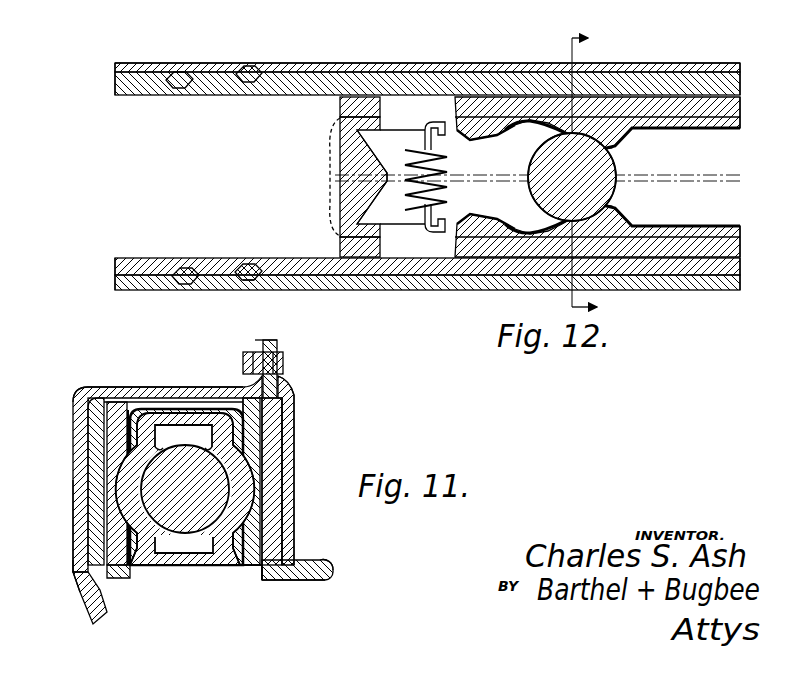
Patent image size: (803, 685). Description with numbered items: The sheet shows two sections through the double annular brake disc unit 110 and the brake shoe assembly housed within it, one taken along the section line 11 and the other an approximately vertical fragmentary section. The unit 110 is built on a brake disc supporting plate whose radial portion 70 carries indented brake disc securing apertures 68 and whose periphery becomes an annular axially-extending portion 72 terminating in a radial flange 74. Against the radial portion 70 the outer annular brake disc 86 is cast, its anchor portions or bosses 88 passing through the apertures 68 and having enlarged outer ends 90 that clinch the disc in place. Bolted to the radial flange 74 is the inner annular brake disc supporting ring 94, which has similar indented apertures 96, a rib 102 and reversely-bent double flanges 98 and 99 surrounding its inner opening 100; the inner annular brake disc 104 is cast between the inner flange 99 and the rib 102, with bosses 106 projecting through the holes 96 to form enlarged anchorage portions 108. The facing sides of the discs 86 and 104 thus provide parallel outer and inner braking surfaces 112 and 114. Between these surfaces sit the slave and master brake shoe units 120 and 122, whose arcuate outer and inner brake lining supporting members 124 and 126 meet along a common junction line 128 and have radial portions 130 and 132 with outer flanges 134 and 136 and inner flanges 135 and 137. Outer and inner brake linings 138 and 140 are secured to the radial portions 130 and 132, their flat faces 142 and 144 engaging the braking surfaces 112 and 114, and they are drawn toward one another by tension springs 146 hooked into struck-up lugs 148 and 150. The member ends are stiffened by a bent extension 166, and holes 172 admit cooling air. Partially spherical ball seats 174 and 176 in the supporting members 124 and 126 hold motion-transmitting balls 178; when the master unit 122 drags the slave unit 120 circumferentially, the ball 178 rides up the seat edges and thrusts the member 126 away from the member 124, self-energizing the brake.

In FIG. 12, the section line 11— 11 is at (602, 174).
In FIG. 12, the indented brake disc securing apertures 68 is at (180, 84).
In FIG. 11, the radial portion 70 is at (80, 468).
In FIG. 11, the annular axially-extending portion 72 is at (118, 388).
In FIG. 11, the radial flange 74 is at (262, 340).
In FIG. 12, the outer annular brake disc 86 is at (487, 82).
In FIG. 11, the outer annular brake disc 86 is at (92, 484).
In FIG. 12, the anchor portions or bosses 88 is at (226, 64).
In FIG. 12, the enlarged outer ends 90 is at (252, 67).
In FIG. 11, the inner annular brake disc supporting ring 94 is at (297, 446).
In FIG. 12, the indented apertures 96 is at (248, 266).
In FIG. 11, the reversely-bent double-flange 98 is at (283, 365).
In FIG. 11, the inner flange 99 is at (322, 580).
In FIG. 11, the inner opening 100 is at (300, 582).
In FIG. 11, the rib 102 is at (298, 398).
In FIG. 12, the inner annular brake disc 104 is at (150, 237).
In FIG. 11, the inner annular brake disc 104 is at (272, 456).
In FIG. 12, the bosses 106 is at (216, 283).
In FIG. 12, the enlarged anchorage portions 108 is at (250, 282).
In FIG. 12, the double annular brake disc unit 110 is at (396, 62).
In FIG. 11, the double annular brake disc unit 110 is at (80, 392).
In FIG. 12, the outer braking surface 112 is at (122, 98).
In FIG. 11, the outer braking surface 112 is at (95, 510).
In FIG. 12, the inner braking surface 114 is at (186, 268).
In FIG. 11, the inner braking surface 114 is at (262, 500).
In FIG. 12, the outer brake shoe unit 120 is at (516, 112).
In FIG. 11, the outer brake shoe unit 120 is at (128, 578).
In FIG. 12, the inner brake shoe unit 122 is at (520, 230).
In FIG. 11, the inner brake shoe unit 122 is at (255, 580).
In FIG. 12, the outer brake lining supporting member 124 is at (690, 120).
In FIG. 11, the outer brake lining supporting member 124 is at (150, 578).
In FIG. 12, the inner brake lining supporting member 126 is at (694, 232).
In FIG. 11, the inner brake lining supporting member 126 is at (222, 578).
In FIG. 11, the common junction line 128 is at (189, 412).
In FIG. 12, the radial portion 130 is at (668, 128).
In FIG. 11, the radial portion 130 is at (128, 432).
In FIG. 12, the radial portion 132 is at (668, 228).
In FIG. 11, the radial portion 132 is at (284, 423).
In FIG. 11, the outer flange 134 is at (160, 410).
In FIG. 11, the inner flange 135 is at (165, 570).
In FIG. 11, the outer flange 136 is at (203, 425).
In FIG. 11, the inner flange 137 is at (205, 570).
In FIG. 12, the outer brake lining 138 is at (340, 105).
In FIG. 11, the outer brake lining 138 is at (95, 452).
In FIG. 12, the inner brake lining 140 is at (340, 248).
In FIG. 11, the inner brake lining 140 is at (260, 478).
In FIG. 11, the flat face 142 is at (100, 540).
In FIG. 11, the flat face 144 is at (262, 535).
In FIG. 12, the tension springs 146 is at (440, 172).
In FIG. 12, the drilled struck-up lug 148 is at (450, 121).
In FIG. 12, the drilled struck-up lug 150 is at (450, 232).
In FIG. 12, the extension 166 is at (335, 150).
In FIG. 12, the holes 172 is at (335, 178).
In FIG. 12, the partially spherical ball seat 174 is at (604, 110).
In FIG. 12, the partially spherical ball seat 176 is at (582, 222).
In FIG. 12, the motion-transmitting ball 178 is at (528, 183).
In FIG. 11, the motion-transmitting ball 178 is at (190, 456).